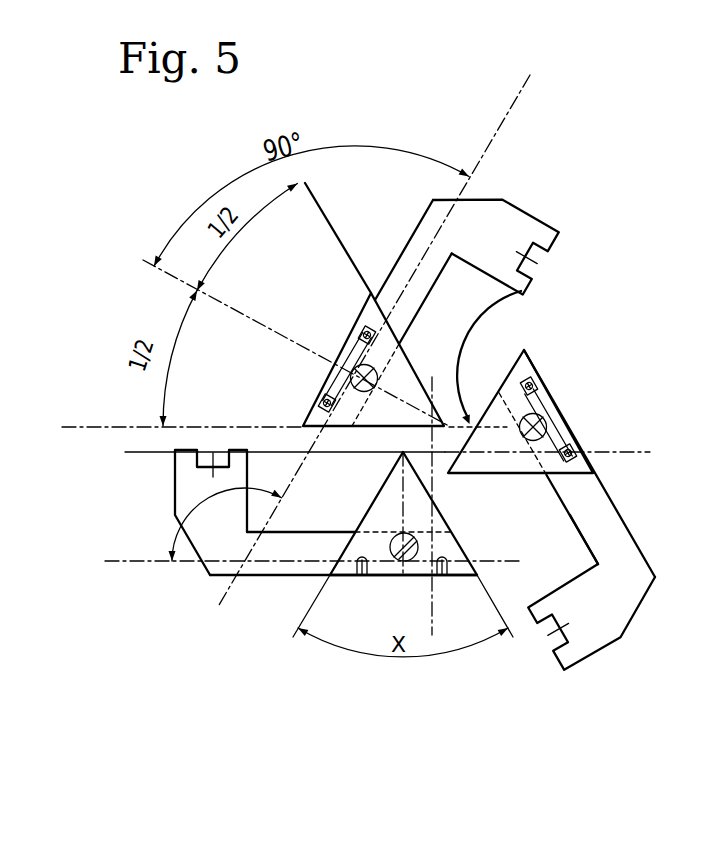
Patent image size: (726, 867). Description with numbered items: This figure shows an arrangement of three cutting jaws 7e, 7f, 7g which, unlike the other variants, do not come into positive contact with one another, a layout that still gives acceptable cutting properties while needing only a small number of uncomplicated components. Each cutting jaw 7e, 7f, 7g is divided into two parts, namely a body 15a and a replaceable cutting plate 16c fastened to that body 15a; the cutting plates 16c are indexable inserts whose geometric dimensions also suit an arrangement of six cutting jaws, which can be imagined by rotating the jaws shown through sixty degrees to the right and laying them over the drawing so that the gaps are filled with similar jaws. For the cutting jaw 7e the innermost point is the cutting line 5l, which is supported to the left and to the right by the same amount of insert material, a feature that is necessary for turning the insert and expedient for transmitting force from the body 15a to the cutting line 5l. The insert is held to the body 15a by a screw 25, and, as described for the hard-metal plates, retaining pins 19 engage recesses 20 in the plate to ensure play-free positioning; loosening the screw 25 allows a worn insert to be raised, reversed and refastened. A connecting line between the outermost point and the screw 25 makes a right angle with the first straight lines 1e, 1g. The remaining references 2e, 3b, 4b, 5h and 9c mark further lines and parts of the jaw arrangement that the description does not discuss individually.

The first straight line 1e is at (519, 100).
The first straight line 1g is at (120, 565).
The radial axis line 2e is at (65, 428).
The base jaw body 3b is at (225, 533).
The triangular carrier 4b is at (428, 363).
The triangular base jaw 5h is at (444, 516).
The cutting line 5l is at (369, 432).
The cutting jaw 7e is at (546, 219).
The cutting jaw 7f is at (598, 650).
The cutting jaw 7g is at (248, 580).
The base jaw body 9c is at (542, 512).
The body 15a is at (619, 554).
The cutting plate 16c is at (500, 388).
The retaining pin 19 is at (532, 388).
The recess 20 is at (443, 576).
The screw 25 is at (351, 372).